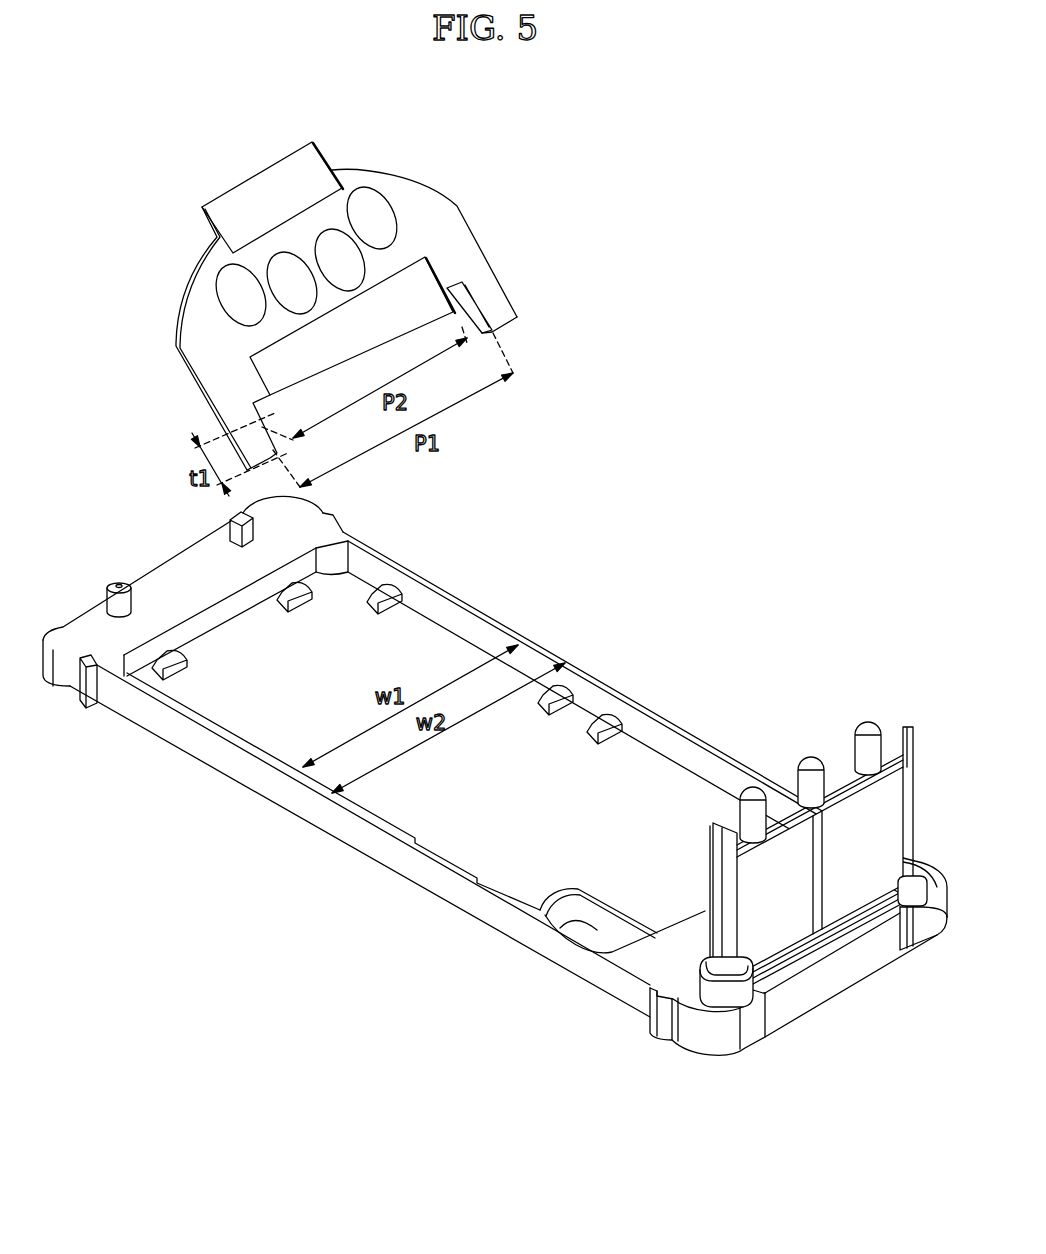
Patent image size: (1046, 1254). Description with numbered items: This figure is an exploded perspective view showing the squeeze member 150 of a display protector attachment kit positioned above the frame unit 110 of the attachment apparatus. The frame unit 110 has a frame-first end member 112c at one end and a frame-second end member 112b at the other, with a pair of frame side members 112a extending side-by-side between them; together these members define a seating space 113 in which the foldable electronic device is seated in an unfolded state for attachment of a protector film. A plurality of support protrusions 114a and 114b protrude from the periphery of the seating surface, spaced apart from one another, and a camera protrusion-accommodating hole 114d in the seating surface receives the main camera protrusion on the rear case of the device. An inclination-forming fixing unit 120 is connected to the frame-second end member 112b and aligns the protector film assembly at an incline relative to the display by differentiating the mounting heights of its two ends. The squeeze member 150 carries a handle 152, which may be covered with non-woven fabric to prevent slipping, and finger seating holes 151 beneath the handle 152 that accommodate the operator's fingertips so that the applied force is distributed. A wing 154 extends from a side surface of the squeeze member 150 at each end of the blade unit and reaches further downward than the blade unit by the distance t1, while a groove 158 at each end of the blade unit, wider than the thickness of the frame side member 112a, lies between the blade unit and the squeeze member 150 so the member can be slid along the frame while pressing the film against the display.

The frame unit 110 is at (603, 997).
The frame side member 112a is at (408, 860).
The frame-second end member 112b is at (937, 883).
The frame-first end member 112c is at (78, 620).
The seating space 113 is at (432, 665).
The support protrusion 114a is at (560, 697).
The support protrusion 114b is at (607, 722).
The camera protrusion-accommodating hole 114d is at (565, 925).
The inclination-forming fixing unit 120 is at (893, 720).
The squeeze member 150 is at (405, 157).
The finger seating hole 151 is at (362, 205).
The handle 152 is at (263, 188).
The wing 154 is at (497, 316).
The groove 158 is at (466, 296).